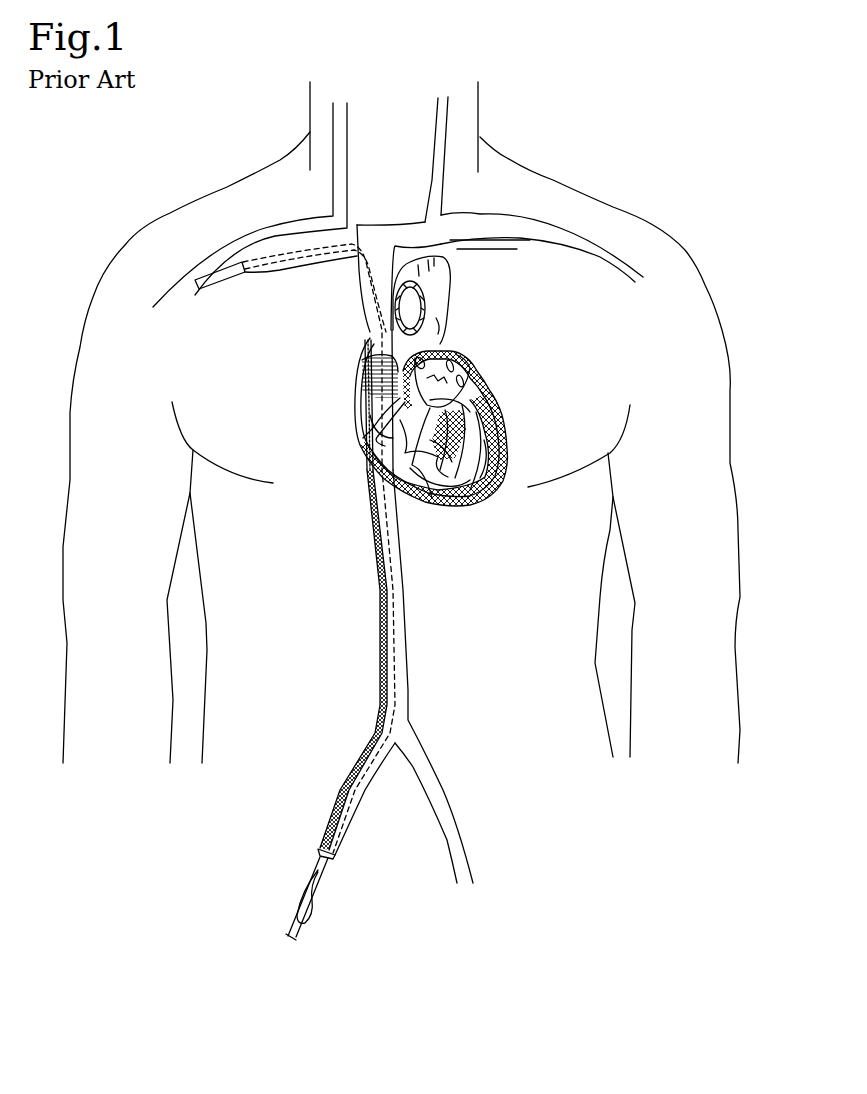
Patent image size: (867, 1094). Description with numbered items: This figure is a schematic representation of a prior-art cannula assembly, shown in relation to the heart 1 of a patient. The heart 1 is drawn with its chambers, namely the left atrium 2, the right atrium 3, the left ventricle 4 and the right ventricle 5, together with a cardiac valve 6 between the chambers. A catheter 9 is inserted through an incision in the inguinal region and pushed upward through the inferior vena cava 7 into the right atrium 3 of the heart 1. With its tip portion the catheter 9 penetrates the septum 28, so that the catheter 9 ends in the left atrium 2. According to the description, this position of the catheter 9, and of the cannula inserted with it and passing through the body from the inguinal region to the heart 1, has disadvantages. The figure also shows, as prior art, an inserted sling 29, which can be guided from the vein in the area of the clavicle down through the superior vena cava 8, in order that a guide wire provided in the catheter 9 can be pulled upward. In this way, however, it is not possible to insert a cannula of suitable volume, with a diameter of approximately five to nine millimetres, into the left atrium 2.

The heart 1 is at (484, 504).
The left atrium 2 is at (450, 382).
The right atrium 3 is at (357, 408).
The left ventricle 4 is at (492, 457).
The right ventricle 5 is at (433, 490).
The cardiac valve 6 is at (438, 465).
The inferior vena cava 7 is at (407, 604).
The superior vena cava 8 is at (360, 295).
The catheter 9 is at (294, 932).
The septum 28 is at (412, 373).
The sling 29 is at (320, 872).